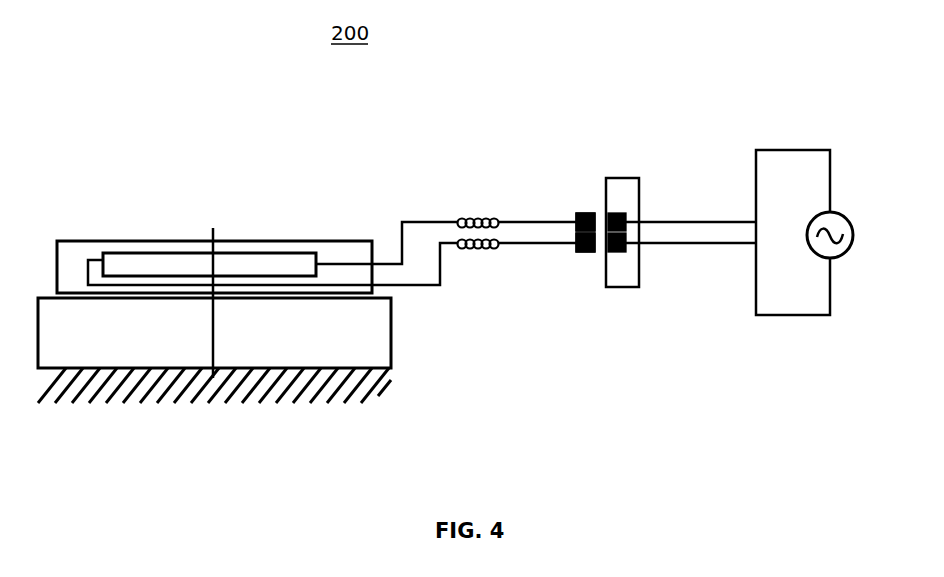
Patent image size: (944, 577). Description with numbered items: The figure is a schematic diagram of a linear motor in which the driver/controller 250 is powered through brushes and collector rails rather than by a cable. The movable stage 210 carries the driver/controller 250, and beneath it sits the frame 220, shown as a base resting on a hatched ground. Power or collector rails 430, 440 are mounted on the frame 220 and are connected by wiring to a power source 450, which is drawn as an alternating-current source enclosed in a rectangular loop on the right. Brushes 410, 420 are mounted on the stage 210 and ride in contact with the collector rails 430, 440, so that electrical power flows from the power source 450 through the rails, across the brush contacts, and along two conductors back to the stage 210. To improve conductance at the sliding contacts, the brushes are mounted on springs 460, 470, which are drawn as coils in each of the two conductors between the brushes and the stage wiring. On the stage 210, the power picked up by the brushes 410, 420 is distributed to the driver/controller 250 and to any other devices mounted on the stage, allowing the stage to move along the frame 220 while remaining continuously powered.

The stage 210 is at (72, 252).
The frame 220 is at (162, 339).
The driver/controller 250 is at (269, 217).
The brush 410 is at (620, 163).
The brush 420 is at (583, 252).
The collector rail 430 is at (739, 180).
The collector rail 440 is at (617, 253).
The power source 450 is at (833, 242).
The spring 460 is at (513, 151).
The spring 470 is at (470, 252).